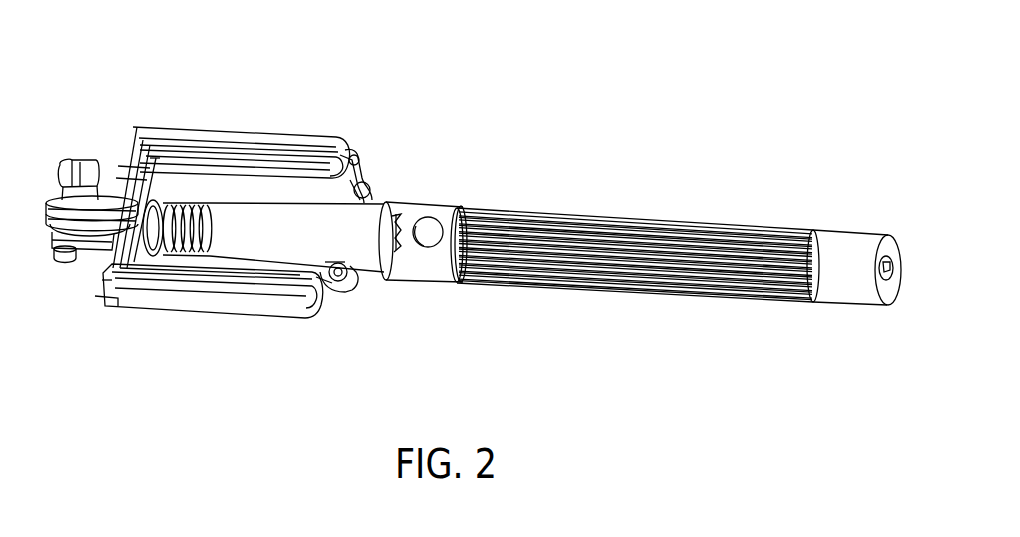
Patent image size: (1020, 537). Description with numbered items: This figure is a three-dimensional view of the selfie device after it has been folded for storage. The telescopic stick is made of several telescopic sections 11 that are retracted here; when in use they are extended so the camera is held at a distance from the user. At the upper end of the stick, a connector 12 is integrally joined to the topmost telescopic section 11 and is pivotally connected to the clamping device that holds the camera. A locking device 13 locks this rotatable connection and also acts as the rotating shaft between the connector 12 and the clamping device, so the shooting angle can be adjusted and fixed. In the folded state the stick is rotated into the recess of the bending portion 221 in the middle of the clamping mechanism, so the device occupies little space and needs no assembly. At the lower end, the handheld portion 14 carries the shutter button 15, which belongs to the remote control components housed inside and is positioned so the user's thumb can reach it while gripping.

The telescopic section 11 is at (161, 262).
The connector 12 is at (103, 183).
The locking device 13 is at (71, 148).
The handheld portion 14 is at (690, 216).
The shutter button 15 is at (436, 256).
The bending portion 221 is at (386, 190).